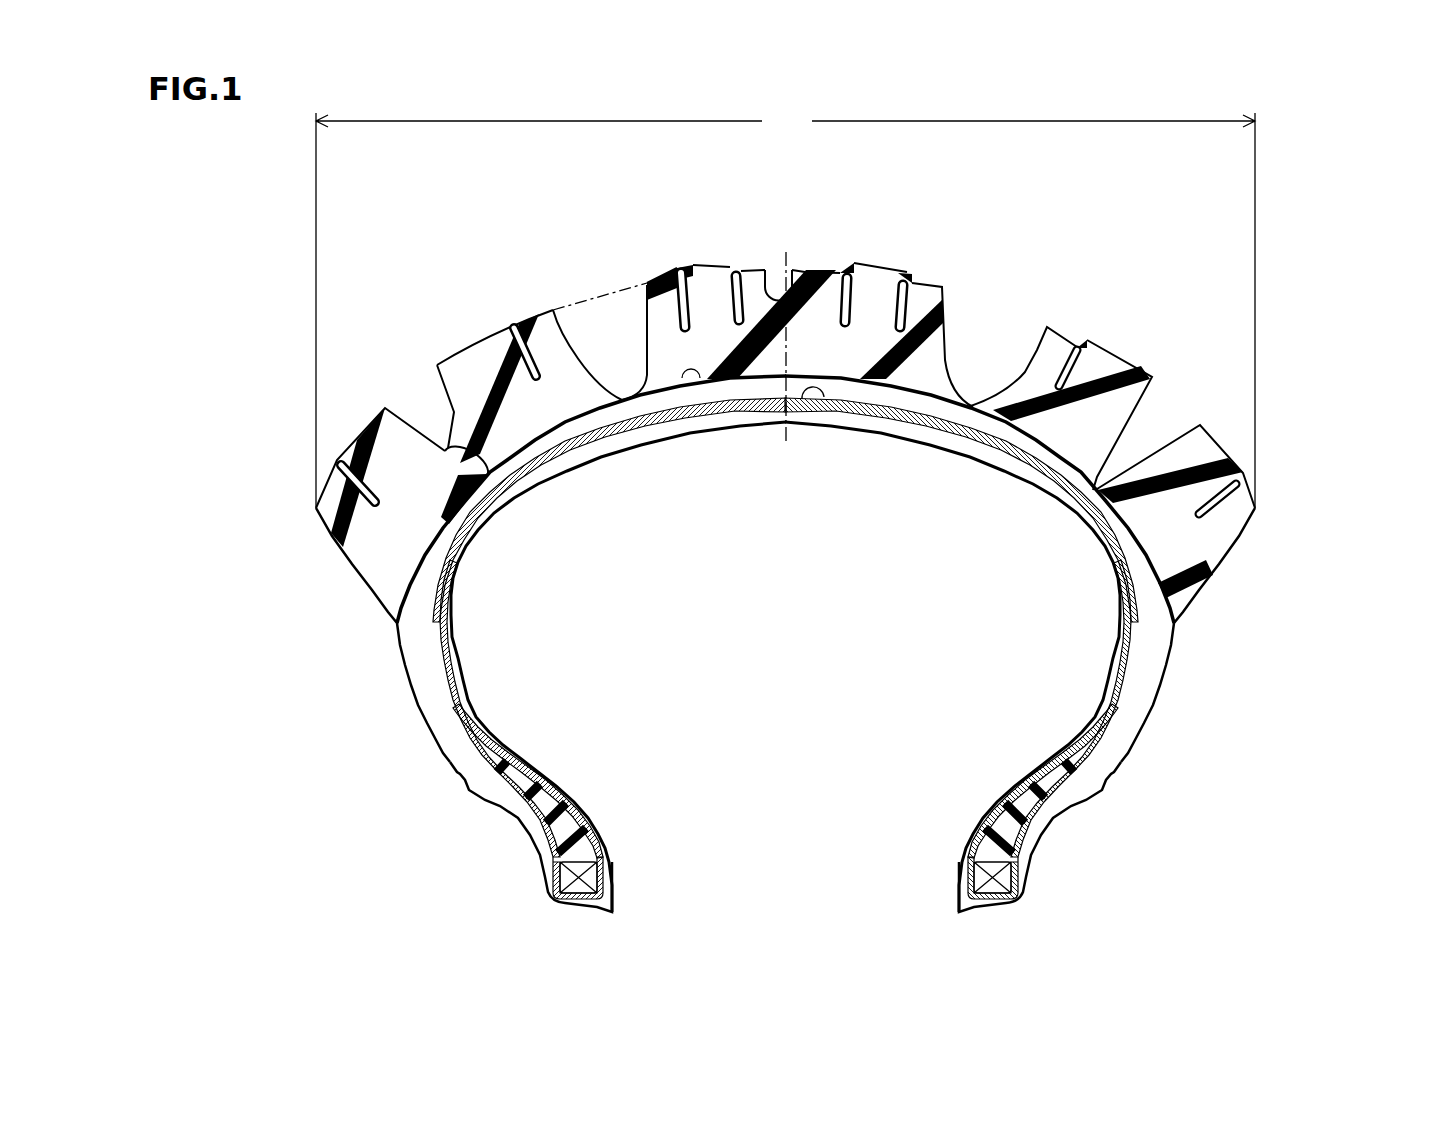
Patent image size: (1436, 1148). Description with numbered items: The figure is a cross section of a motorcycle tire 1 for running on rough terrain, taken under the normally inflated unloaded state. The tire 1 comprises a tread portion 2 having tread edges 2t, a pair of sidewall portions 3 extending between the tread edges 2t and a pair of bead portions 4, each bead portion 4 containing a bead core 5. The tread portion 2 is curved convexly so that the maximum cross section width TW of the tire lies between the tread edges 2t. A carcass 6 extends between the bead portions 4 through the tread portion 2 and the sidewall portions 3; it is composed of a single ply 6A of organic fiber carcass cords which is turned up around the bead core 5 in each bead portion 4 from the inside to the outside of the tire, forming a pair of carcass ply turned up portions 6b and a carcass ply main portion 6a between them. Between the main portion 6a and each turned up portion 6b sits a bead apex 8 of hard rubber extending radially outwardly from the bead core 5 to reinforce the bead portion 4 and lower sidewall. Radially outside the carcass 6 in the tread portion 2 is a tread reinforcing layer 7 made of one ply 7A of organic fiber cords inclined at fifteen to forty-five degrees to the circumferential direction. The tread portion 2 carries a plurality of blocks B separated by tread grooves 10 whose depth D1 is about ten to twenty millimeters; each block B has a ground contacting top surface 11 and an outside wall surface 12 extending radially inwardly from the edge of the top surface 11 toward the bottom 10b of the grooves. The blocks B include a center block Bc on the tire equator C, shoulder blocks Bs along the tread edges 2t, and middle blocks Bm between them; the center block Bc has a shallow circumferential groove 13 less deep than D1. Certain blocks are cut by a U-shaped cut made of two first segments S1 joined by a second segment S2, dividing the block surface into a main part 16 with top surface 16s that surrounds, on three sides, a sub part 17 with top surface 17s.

The motorcycle tire 1 is at (1305, 225).
The tread portion 2 is at (1018, 225).
The tread edges 2t is at (316, 508).
The sidewall portions 3 is at (386, 681).
The bead portions 4 is at (623, 865).
The bead core 5 is at (567, 877).
The carcass 6 is at (785, 729).
The carcass ply 6A is at (978, 640).
The carcass ply main portion 6a is at (1125, 690).
The carcass ply turned up portions 6b is at (1110, 730).
The tread reinforcing layer 7 is at (785, 504).
The reinforcing ply 7A is at (818, 402).
The bead apex 8 is at (557, 827).
The tread grooves 10 is at (792, 386).
The bottom of the tread grooves 10b is at (690, 386).
The ground contacting top surface 11 is at (358, 437).
The outside wall surface 12 is at (520, 497).
The shallow groove 13 is at (773, 270).
The main part 16 is at (748, 260).
The sub part 17 is at (703, 257).
The top surface of the main part 16s is at (912, 280).
The top surface of the sub part 17s is at (868, 262).
The blocks B is at (592, 178).
The shoulder blocks Bs is at (360, 405).
The middle blocks Bm is at (483, 322).
The center block Bc is at (683, 258).
The first segments S1 is at (676, 318).
The second segment S2 is at (535, 373).
The depth of the tread grooves D1 is at (596, 303).
The maximum cross section width TW is at (785, 309).
The tire equator C is at (785, 336).